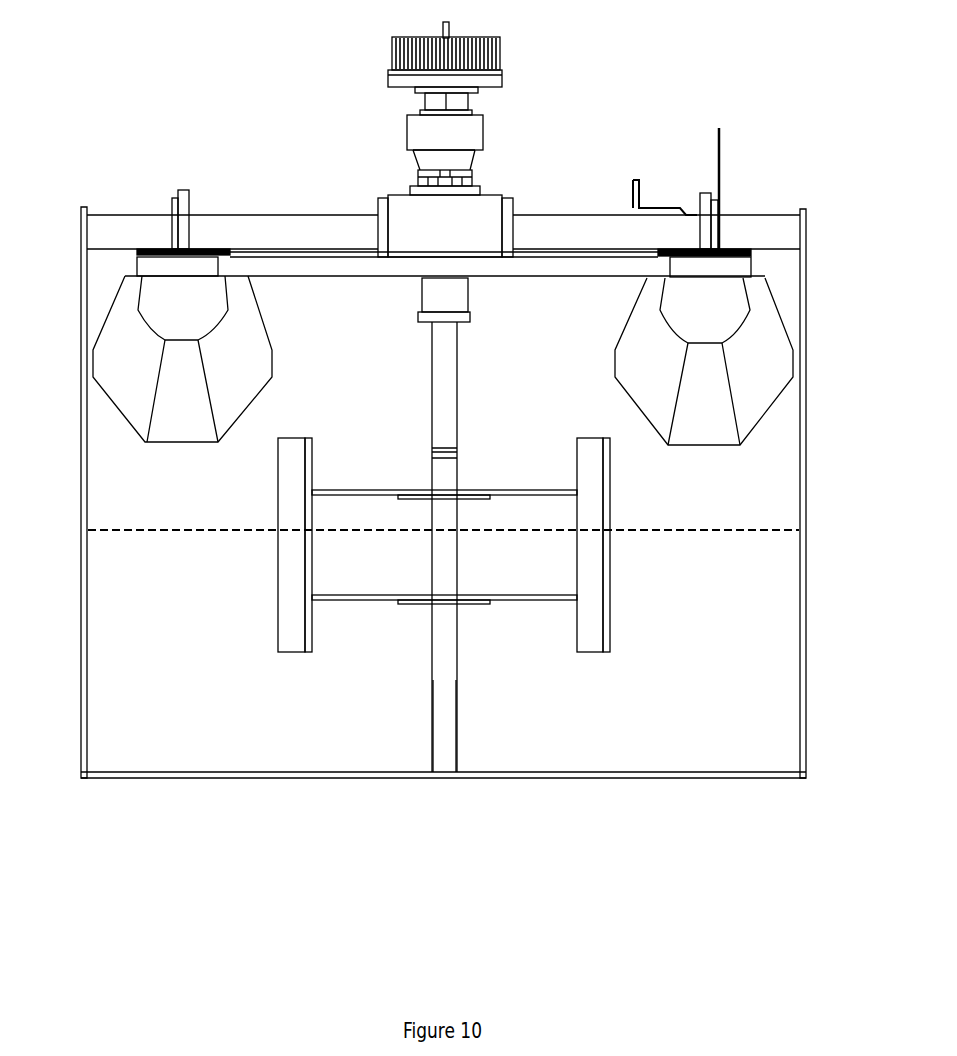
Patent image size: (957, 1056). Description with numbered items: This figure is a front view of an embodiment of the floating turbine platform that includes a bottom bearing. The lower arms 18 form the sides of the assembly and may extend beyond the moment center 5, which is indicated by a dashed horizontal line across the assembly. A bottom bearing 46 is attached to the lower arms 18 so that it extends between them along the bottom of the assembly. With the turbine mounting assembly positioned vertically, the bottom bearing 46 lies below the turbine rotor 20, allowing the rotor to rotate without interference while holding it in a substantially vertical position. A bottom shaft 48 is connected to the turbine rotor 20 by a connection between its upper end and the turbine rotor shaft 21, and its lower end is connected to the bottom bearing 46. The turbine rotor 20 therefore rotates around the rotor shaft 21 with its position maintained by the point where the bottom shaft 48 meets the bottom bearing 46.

The moment center 5 is at (758, 530).
The lower arm 18 is at (80, 648).
The turbine rotor 20 is at (610, 597).
The turbine rotor shaft 21 is at (457, 575).
The bottom bearing 46 is at (632, 780).
The bottom shaft 48 is at (457, 715).